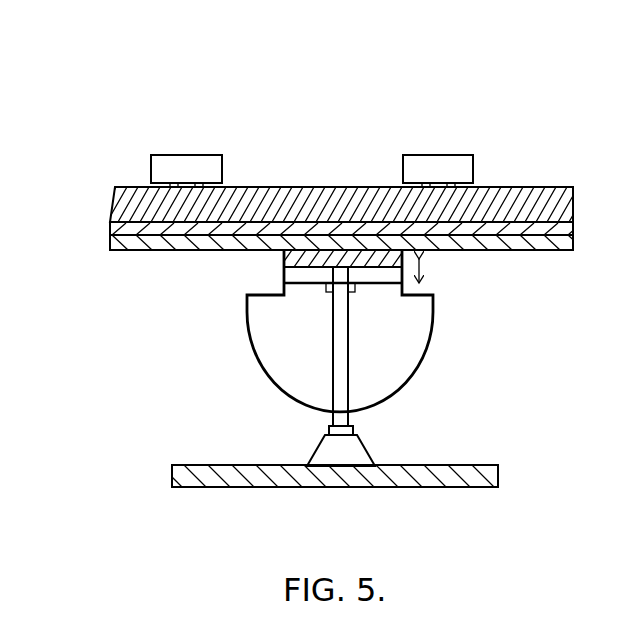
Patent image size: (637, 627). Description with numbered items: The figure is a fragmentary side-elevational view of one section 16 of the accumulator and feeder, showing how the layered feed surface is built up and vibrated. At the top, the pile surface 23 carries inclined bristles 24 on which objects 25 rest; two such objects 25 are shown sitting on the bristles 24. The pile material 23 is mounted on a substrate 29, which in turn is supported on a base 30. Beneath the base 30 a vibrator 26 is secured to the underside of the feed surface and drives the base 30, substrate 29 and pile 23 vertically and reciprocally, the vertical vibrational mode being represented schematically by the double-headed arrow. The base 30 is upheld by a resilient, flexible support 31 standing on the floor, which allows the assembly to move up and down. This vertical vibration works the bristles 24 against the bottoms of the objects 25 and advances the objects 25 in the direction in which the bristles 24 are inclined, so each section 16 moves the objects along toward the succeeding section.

The section 16 is at (329, 82).
The pile surface 23 is at (112, 225).
The bristles 24 is at (125, 213).
The objects 25 is at (200, 155).
The vibrator 26 is at (435, 325).
The substrate 29 is at (112, 238).
The base 30 is at (285, 257).
The resilient flexible support 31 is at (330, 383).